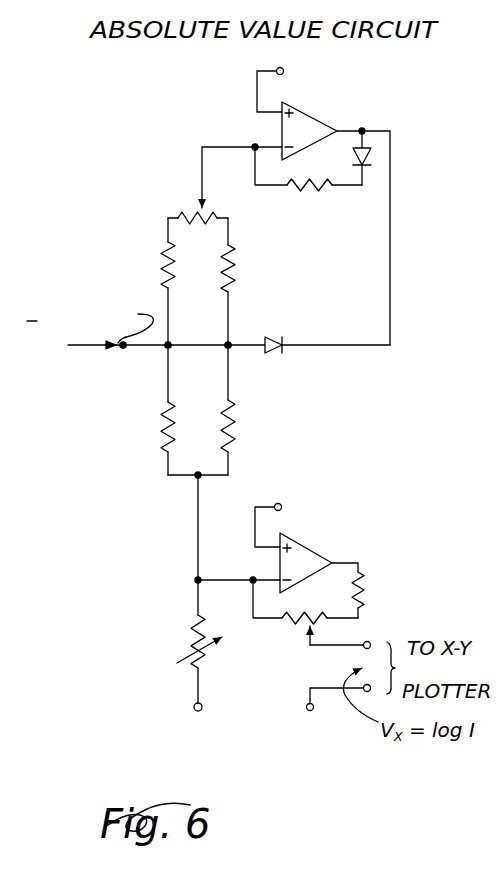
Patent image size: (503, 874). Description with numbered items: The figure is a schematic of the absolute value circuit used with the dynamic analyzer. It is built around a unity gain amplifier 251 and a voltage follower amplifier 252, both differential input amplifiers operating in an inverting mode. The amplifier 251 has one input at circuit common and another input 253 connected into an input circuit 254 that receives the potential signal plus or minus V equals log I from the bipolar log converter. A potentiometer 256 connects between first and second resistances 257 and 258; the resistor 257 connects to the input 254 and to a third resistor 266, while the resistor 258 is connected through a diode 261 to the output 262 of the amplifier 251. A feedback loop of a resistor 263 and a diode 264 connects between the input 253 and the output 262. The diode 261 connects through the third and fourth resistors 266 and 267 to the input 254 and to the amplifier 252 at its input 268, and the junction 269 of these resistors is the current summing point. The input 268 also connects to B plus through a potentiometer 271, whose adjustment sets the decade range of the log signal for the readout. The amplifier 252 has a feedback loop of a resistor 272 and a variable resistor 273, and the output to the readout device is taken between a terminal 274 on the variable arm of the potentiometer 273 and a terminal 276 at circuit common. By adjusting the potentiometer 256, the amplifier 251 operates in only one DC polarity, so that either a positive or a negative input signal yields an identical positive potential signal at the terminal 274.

The unity gain amplifier 251 is at (308, 112).
The voltage follower amplifier 252 is at (310, 545).
The input 253 is at (266, 147).
The input circuit 254 is at (85, 348).
The potentiometer 256 is at (197, 213).
The first resistance 257 is at (167, 260).
The second resistance 258 is at (236, 255).
The diode 261 is at (270, 337).
The output 262 is at (345, 128).
The resistor 263 is at (303, 191).
The diode 264 is at (373, 160).
The third resistor 266 is at (177, 413).
The fourth resistor 267 is at (230, 412).
The input 268 is at (270, 578).
The junction 269 is at (195, 482).
The potentiometer 271 is at (193, 638).
The resistor 272 is at (368, 592).
The variable resistor 273 is at (305, 622).
The terminal 274 is at (370, 640).
The terminal 276 is at (373, 691).